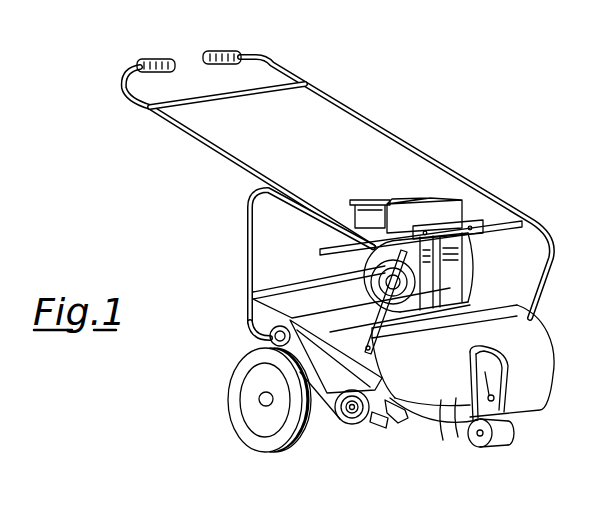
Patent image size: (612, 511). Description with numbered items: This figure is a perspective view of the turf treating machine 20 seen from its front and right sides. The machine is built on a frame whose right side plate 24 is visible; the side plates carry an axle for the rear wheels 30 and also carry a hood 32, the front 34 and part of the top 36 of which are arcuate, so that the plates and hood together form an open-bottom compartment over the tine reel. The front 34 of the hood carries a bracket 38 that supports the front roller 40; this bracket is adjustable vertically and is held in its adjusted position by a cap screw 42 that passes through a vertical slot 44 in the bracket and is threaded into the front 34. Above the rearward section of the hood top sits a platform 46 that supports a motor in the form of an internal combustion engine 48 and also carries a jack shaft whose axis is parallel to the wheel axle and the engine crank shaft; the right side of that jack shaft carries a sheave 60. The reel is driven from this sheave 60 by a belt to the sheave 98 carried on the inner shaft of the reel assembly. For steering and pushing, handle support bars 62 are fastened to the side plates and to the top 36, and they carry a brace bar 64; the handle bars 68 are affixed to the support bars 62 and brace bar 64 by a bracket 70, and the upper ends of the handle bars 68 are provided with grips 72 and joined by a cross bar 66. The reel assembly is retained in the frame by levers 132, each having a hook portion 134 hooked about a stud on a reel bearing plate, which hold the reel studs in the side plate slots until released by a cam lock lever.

The machine 20 is at (541, 330).
The right side plate 24 is at (438, 413).
The rear wheels 30 is at (230, 409).
The hood 32 is at (458, 415).
The front 34 is at (444, 420).
The top 36 is at (509, 312).
The bracket 38 is at (498, 363).
The front roller 40 is at (513, 433).
The cap screw 42 is at (494, 398).
The vertical slot 44 is at (489, 384).
The platform 46 is at (335, 318).
The internal combustion engine 48 is at (380, 289).
The sheave 60 is at (269, 320).
The handle support bars 62 is at (247, 250).
The brace bar 64 is at (506, 225).
The cross bar 66 is at (246, 98).
The handle bars 68 is at (200, 139).
The bracket 70 is at (469, 230).
The grips 72 is at (167, 59).
The sheave 98 is at (344, 432).
The levers 132 is at (394, 428).
The hook portion 134 is at (384, 432).